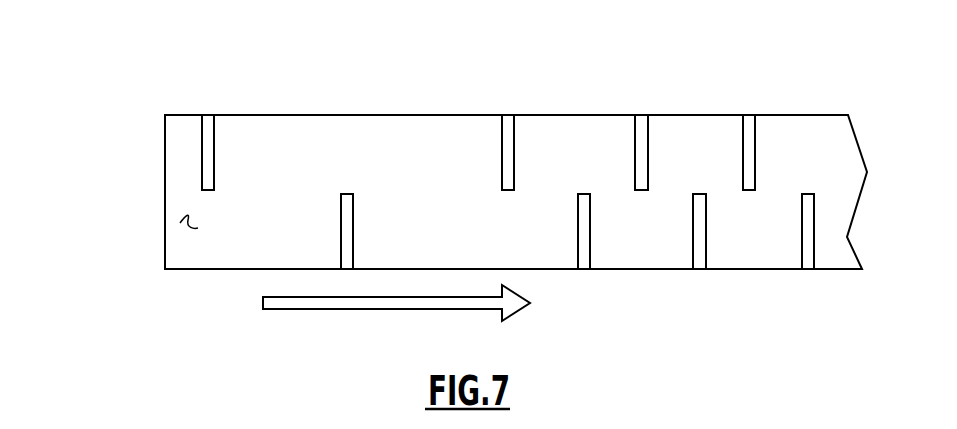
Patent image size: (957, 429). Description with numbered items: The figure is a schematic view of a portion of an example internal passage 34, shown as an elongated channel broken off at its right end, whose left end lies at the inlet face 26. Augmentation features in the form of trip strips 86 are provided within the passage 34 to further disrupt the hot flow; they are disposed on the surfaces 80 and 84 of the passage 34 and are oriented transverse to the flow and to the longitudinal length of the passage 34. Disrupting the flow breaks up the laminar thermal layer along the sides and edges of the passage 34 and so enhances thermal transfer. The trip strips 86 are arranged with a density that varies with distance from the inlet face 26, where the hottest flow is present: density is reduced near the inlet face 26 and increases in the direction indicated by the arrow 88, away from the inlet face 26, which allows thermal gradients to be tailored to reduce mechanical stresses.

The inlet face 26 is at (148, 124).
The passage 34 is at (462, 151).
The surface 80 is at (186, 122).
The surface 84 is at (180, 223).
The trip strips 86 is at (208, 150).
The arrow 88 is at (390, 303).